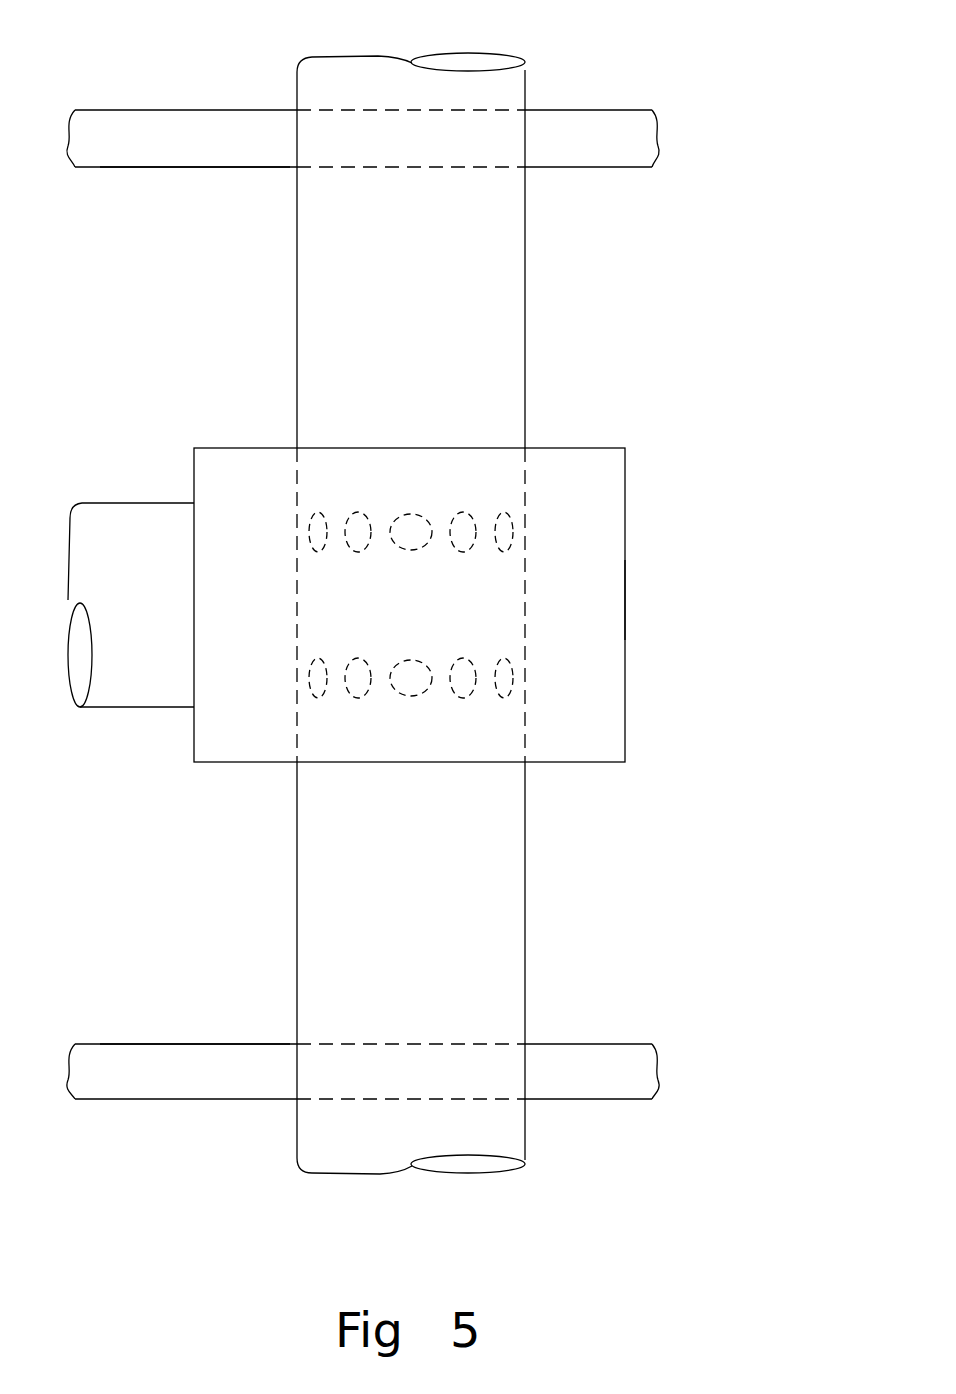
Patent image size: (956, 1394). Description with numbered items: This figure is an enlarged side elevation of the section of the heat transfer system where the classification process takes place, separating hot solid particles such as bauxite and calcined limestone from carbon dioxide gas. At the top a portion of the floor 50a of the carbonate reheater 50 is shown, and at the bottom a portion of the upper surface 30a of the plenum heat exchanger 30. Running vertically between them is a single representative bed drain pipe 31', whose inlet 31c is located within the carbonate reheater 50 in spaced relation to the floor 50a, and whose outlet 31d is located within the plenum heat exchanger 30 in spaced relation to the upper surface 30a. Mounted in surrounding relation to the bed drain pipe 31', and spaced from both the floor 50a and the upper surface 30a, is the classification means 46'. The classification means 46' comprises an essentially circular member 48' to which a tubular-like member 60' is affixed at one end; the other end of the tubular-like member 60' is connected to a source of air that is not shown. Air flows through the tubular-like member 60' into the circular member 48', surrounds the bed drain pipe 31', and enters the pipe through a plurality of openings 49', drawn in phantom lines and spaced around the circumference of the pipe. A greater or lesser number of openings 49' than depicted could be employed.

The bed drain pipe 31' is at (411, 615).
The inlet 31c is at (465, 54).
The outlet 31d is at (468, 1173).
The carbonate reheater 50 is at (121, 72).
The floor 50a is at (126, 168).
The plenum heat exchanger 30 is at (121, 1152).
The upper surface 30a is at (128, 1043).
The circular member 48' is at (463, 583).
The classification means 46' is at (679, 600).
The tubular-like member 60' is at (112, 584).
The openings 49' is at (324, 608).